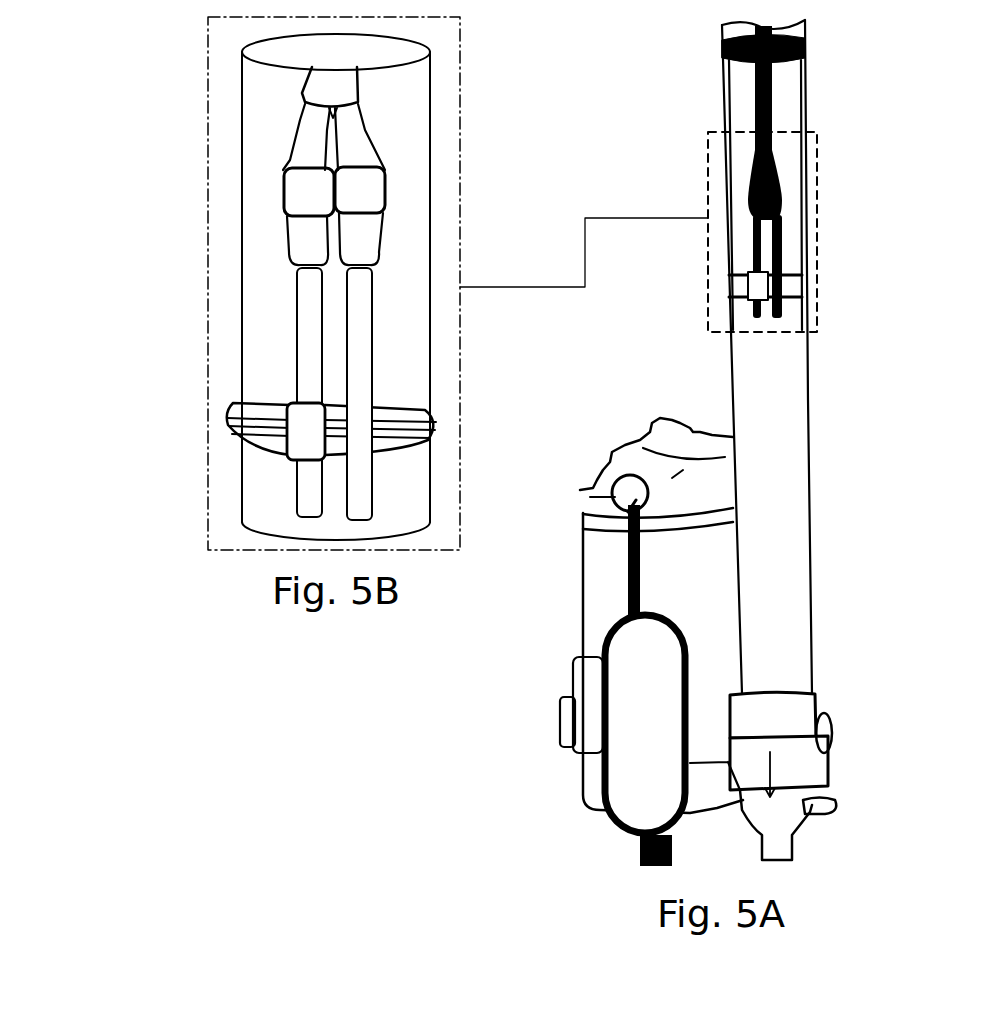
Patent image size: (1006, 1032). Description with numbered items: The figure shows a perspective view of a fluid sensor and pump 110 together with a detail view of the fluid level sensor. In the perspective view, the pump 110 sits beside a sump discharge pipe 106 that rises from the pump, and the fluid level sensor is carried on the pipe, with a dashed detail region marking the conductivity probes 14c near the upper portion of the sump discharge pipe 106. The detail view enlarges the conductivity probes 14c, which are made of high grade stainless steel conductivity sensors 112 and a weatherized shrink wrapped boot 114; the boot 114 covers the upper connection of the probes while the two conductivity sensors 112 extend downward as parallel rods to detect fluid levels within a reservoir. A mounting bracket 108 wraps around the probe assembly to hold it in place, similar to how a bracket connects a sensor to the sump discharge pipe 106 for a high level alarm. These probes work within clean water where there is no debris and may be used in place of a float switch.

In FIG. 5A, the conductivity probes 14c is at (843, 190).
In FIG. 5A, the sump discharge pipe 106 is at (775, 618).
In FIG. 5B, the mounting bracket 108 is at (228, 427).
In FIG. 5A, the pump 110 is at (600, 593).
In FIG. 5B, the conductivity sensors 112 is at (298, 497).
In FIG. 5B, the weatherized shrink wrapped boot 114 is at (308, 199).